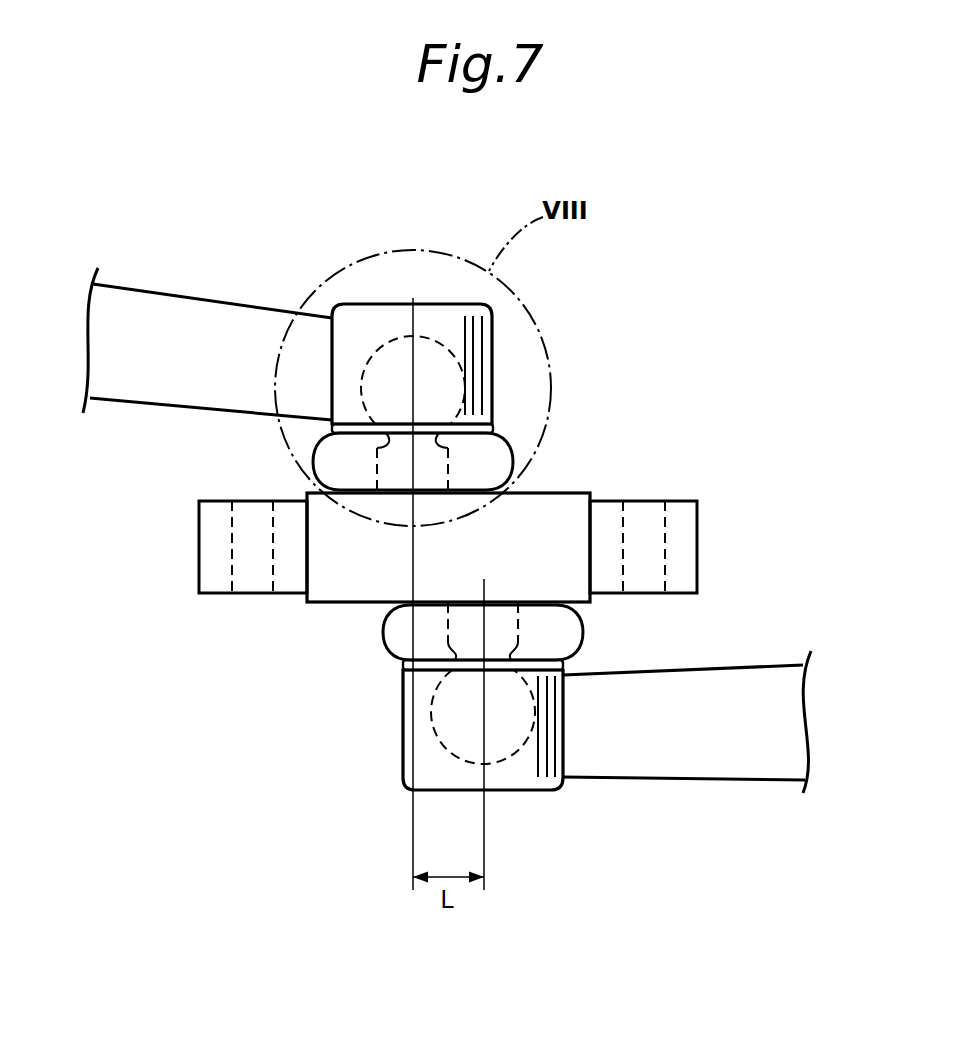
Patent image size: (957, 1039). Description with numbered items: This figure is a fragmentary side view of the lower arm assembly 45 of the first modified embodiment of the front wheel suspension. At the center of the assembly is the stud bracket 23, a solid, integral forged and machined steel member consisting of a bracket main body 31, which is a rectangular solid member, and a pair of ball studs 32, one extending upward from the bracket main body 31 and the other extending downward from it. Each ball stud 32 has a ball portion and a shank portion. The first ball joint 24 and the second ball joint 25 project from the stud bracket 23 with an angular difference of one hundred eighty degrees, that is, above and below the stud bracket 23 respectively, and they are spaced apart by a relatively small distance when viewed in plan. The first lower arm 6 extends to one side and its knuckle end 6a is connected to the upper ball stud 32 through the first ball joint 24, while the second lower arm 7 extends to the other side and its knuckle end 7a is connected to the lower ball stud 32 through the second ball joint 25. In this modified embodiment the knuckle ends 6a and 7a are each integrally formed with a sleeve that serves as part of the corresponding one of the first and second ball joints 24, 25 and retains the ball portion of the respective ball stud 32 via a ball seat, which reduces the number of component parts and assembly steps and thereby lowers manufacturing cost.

The first lower arm 6 is at (152, 300).
The knuckle end of first lower arm 6a is at (471, 314).
The second lower arm 7 is at (693, 776).
The knuckle end of second lower arm 7a is at (443, 767).
The stud bracket 23 is at (448, 546).
The first ball joint 24 is at (504, 359).
The second ball joint 25 is at (398, 762).
The bracket main body 31 is at (330, 598).
The ball stud 32 is at (390, 343).
The lower arm assembly 45 is at (687, 312).